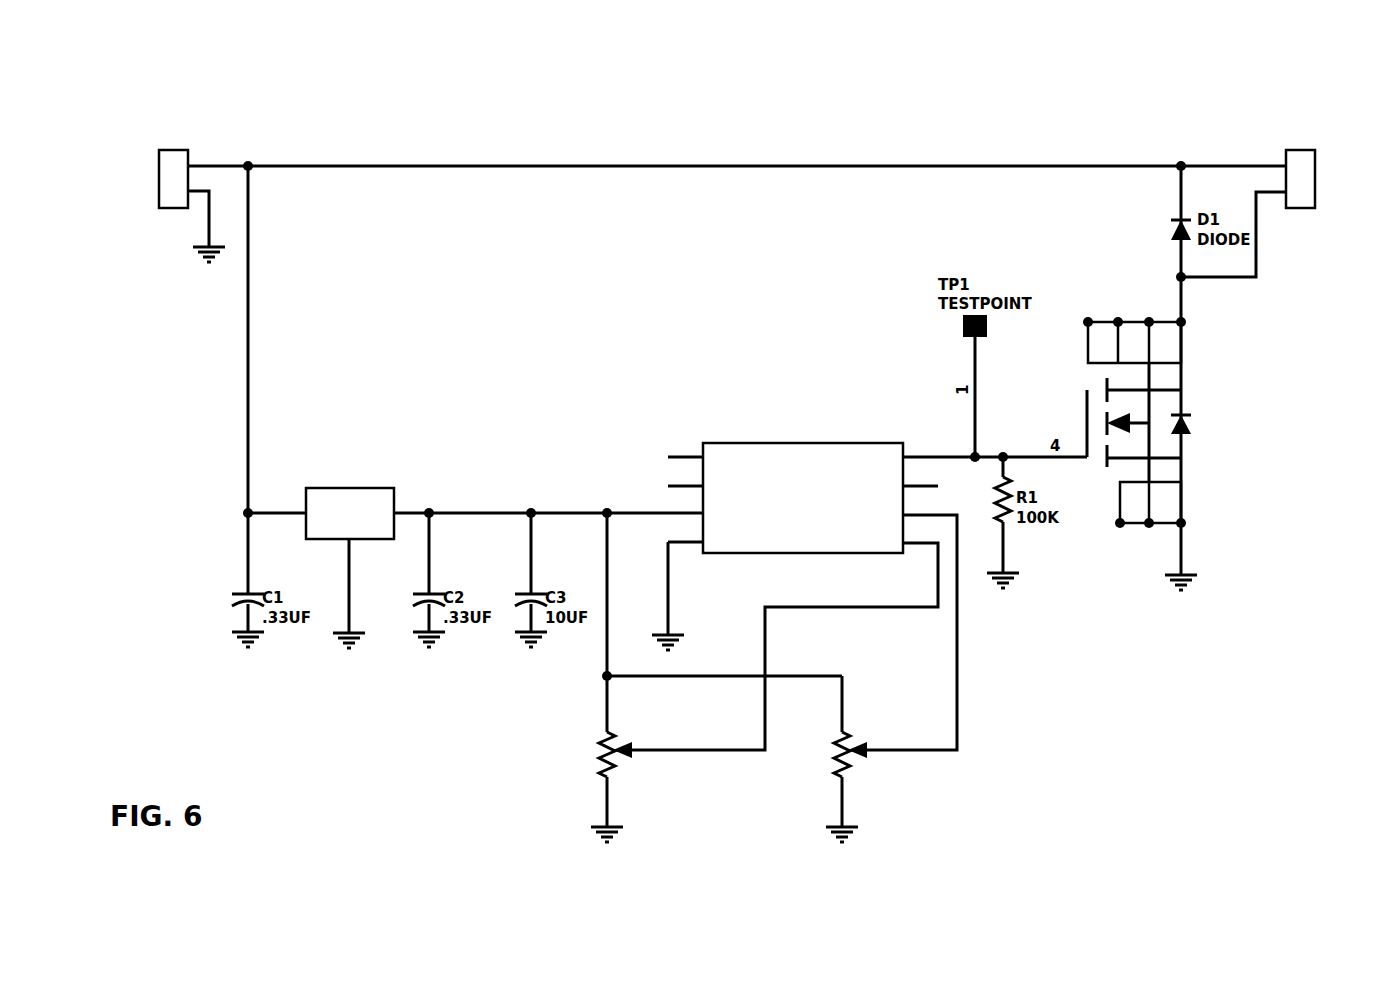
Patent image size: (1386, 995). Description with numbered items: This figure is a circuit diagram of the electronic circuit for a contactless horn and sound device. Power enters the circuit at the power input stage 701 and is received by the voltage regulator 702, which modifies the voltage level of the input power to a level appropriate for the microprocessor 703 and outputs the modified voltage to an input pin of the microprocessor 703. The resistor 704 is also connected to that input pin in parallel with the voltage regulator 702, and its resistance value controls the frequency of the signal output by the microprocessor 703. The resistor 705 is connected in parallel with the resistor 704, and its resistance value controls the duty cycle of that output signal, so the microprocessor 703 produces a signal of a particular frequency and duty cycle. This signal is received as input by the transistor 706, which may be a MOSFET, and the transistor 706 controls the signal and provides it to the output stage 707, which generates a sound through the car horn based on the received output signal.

The power input stage 701 is at (171, 157).
The voltage regulator 702 is at (354, 536).
The microprocessor 703 is at (859, 564).
The resistor 704 is at (611, 772).
The resistor 705 is at (852, 772).
The transistor 706 is at (1198, 453).
The output stage 707 is at (1283, 165).